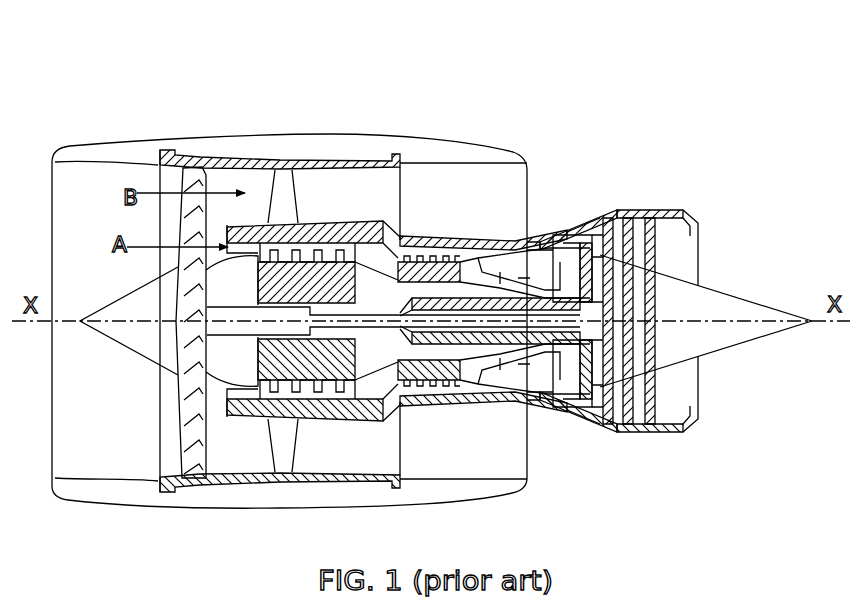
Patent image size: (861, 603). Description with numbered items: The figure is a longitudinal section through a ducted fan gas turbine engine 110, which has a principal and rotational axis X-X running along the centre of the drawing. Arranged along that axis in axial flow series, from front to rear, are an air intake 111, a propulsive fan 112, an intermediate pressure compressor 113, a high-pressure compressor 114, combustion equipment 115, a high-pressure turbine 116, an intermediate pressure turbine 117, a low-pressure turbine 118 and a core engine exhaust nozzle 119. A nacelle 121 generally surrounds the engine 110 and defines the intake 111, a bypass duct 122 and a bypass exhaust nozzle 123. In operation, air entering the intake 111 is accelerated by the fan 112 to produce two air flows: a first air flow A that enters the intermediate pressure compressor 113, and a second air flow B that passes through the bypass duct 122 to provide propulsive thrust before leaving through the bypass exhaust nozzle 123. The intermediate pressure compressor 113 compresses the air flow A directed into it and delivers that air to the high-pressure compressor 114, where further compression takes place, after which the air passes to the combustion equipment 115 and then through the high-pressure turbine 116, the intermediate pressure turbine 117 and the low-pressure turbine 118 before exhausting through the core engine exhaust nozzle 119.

The ducted fan gas turbine engine 110 is at (99, 104).
The air intake 111 is at (100, 165).
The propulsive fan 112 is at (186, 437).
The intermediate pressure compressor 113 is at (328, 398).
The high-pressure compressor 114 is at (437, 256).
The combustion equipment 115 is at (493, 382).
The high-pressure turbine 116 is at (547, 397).
The intermediate pressure turbine 117 is at (582, 235).
The low-pressure turbine 118 is at (593, 420).
The core engine exhaust nozzle 119 is at (690, 223).
The nacelle 121 is at (327, 143).
The bypass duct 122 is at (496, 199).
The bypass exhaust nozzle 123 is at (527, 163).